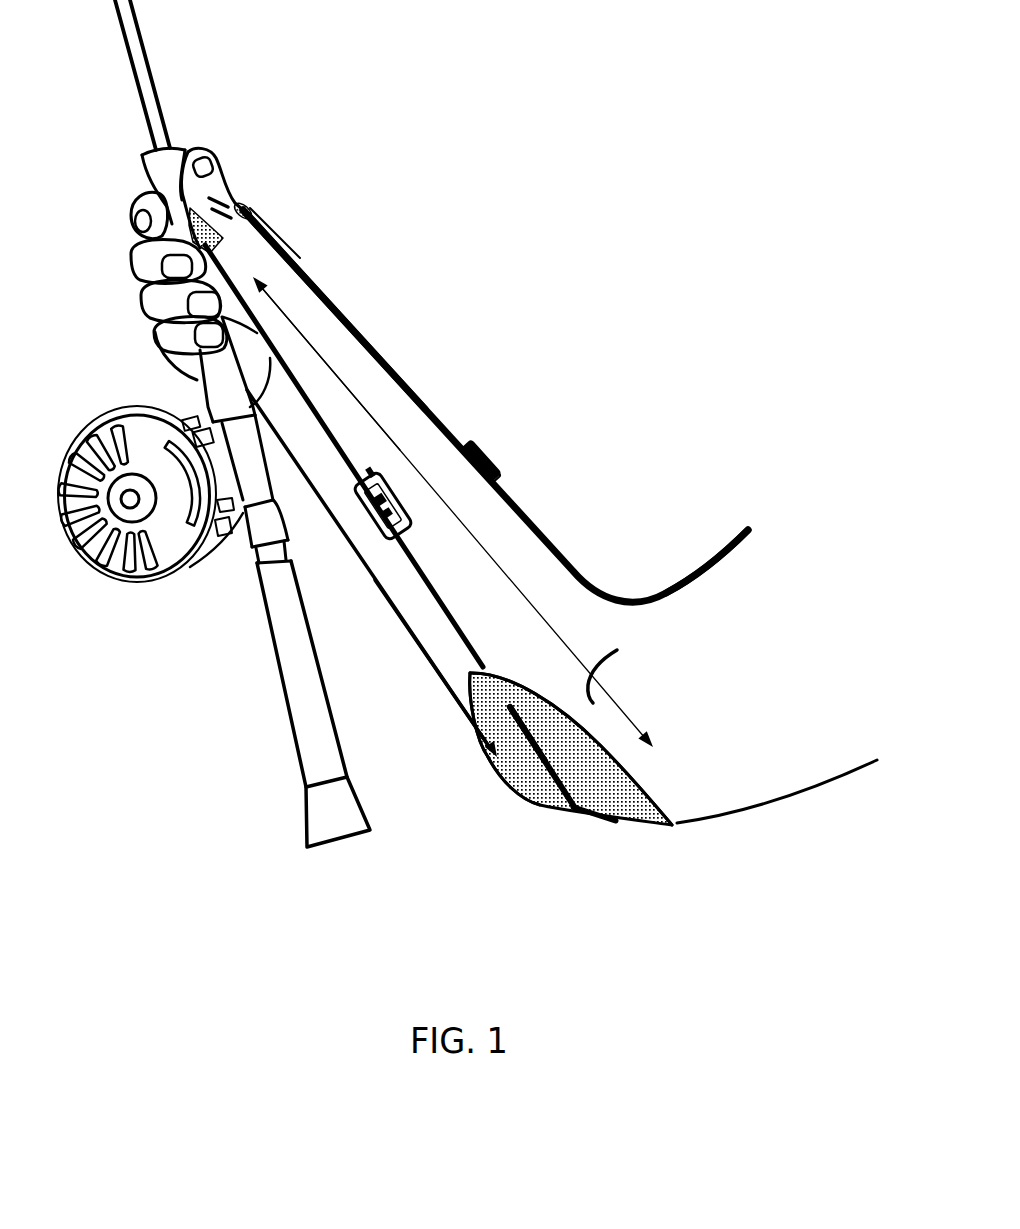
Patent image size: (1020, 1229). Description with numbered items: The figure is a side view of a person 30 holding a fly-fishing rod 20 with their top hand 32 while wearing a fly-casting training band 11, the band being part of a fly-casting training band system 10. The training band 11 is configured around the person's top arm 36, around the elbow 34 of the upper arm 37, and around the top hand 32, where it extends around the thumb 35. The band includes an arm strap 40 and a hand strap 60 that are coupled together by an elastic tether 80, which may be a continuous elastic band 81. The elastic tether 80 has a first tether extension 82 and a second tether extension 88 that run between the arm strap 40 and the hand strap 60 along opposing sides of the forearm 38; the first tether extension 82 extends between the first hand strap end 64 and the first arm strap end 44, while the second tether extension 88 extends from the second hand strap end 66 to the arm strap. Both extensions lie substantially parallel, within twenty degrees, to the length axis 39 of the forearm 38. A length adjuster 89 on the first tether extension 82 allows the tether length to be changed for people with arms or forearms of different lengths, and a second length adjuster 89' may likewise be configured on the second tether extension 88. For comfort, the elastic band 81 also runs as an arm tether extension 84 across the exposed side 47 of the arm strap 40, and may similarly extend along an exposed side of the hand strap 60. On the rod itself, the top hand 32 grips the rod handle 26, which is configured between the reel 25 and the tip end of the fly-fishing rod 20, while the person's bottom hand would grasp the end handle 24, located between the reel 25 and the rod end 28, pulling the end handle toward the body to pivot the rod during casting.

The fly-casting training band system 10 is at (492, 752).
The fly-casting training band 11 is at (485, 701).
The fly-fishing rod 20 is at (140, 86).
The end handle 24 is at (287, 597).
The reel 25 is at (78, 562).
The rod handle 26 is at (167, 182).
The rod end 28 is at (327, 832).
The person 30 is at (667, 620).
The top hand 32 is at (157, 210).
The elbow 34 is at (522, 788).
The thumb 35 is at (190, 158).
The top arm 36 is at (622, 650).
The upper arm 37 is at (740, 563).
The forearm 38 is at (363, 382).
The length axis 39 is at (628, 715).
The arm strap 40 is at (513, 793).
The first arm strap end 44 is at (500, 684).
The exposed side 47 is at (547, 792).
The hand strap 60 is at (240, 190).
The first hand strap end 64 is at (193, 238).
The second hand strap end 66 is at (244, 210).
The elastic tether 80 is at (418, 575).
The elastic band 81 is at (418, 612).
The first tether extension 82 is at (432, 643).
The arm tether extension 84 is at (560, 805).
The second tether extension 88 is at (355, 323).
The length adjuster 89 is at (417, 462).
The second length adjuster 89' is at (514, 422).